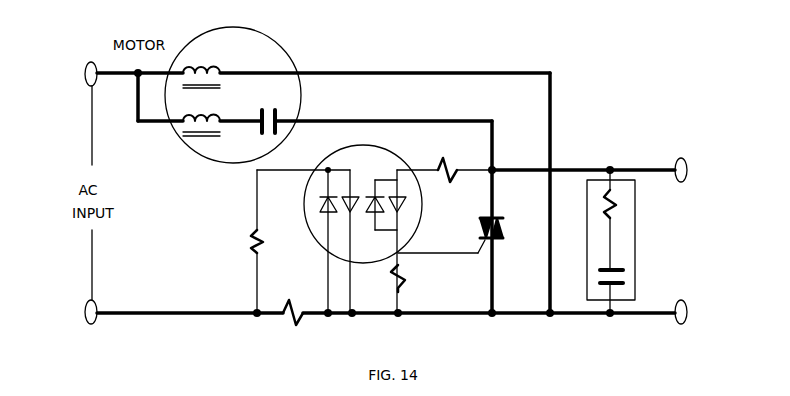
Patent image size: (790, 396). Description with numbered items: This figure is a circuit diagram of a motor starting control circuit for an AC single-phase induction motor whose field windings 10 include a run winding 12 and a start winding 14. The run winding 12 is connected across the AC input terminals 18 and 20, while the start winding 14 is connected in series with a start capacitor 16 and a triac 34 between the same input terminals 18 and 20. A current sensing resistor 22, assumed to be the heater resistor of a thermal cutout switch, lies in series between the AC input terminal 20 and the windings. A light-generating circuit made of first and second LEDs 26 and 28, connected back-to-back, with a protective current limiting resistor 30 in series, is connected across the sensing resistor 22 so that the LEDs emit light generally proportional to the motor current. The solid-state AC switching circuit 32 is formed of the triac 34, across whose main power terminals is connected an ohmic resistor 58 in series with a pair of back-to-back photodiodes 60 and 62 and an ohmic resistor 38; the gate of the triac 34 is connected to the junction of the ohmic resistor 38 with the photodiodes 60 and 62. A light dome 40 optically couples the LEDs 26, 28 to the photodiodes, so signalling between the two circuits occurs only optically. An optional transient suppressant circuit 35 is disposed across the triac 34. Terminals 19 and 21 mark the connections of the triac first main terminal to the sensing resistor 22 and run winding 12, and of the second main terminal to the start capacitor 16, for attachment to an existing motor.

The field windings 10 is at (244, 55).
The run winding 12 is at (211, 64).
The start winding 14 is at (221, 130).
The start capacitor 16 is at (268, 136).
The AC input terminal 18 is at (76, 74).
The terminal 19 is at (693, 312).
The AC input terminal 20 is at (77, 312).
The terminal 21 is at (693, 170).
The current sensing resistor 22 is at (303, 298).
The first LED 26 is at (318, 208).
The second LED 28 is at (358, 187).
The current limiting resistor 30 is at (247, 251).
The solid-state AC switching circuit 32 is at (444, 222).
The triac 34 is at (510, 219).
The transient suppressant circuit 35 is at (626, 248).
The ohmic resistor 38 is at (413, 285).
The light dome 40 is at (315, 245).
The ohmic resistor 58 is at (450, 177).
The photodiode 60 is at (381, 186).
The photodiode 62 is at (406, 208).